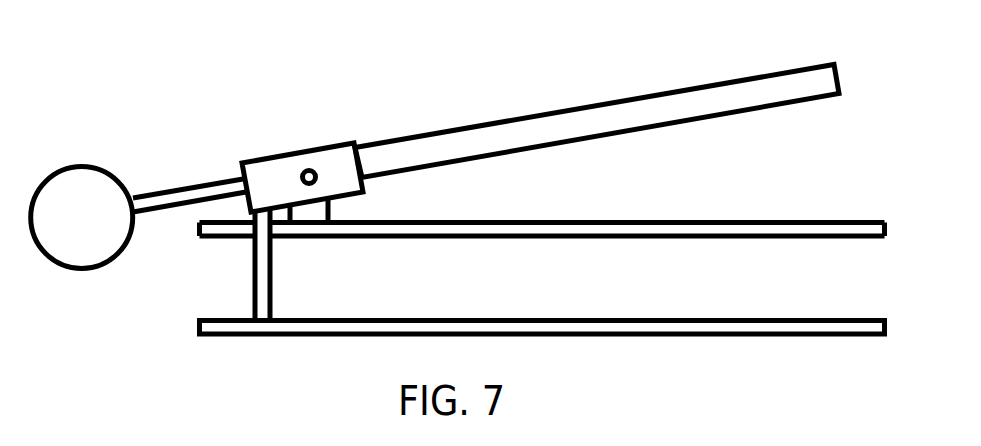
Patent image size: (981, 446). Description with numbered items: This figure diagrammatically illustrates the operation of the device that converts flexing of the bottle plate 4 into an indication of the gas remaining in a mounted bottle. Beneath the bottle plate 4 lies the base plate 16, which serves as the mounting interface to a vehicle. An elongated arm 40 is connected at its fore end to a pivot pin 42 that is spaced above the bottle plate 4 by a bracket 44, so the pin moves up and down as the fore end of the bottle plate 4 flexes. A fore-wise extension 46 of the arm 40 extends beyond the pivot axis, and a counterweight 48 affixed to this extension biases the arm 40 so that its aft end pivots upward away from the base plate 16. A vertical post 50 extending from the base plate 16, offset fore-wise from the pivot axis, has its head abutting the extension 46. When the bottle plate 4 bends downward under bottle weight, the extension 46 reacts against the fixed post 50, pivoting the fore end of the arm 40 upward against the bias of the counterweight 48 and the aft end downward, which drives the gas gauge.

The bottle plate 4 is at (457, 239).
The base plate 16 is at (720, 318).
The elongated arm 40 is at (463, 128).
The pivot pin 42 is at (307, 170).
The bracket 44 is at (332, 212).
The fore-wise extension 46 is at (240, 170).
The counterweight 48 is at (90, 228).
The vertical post 50 is at (252, 282).